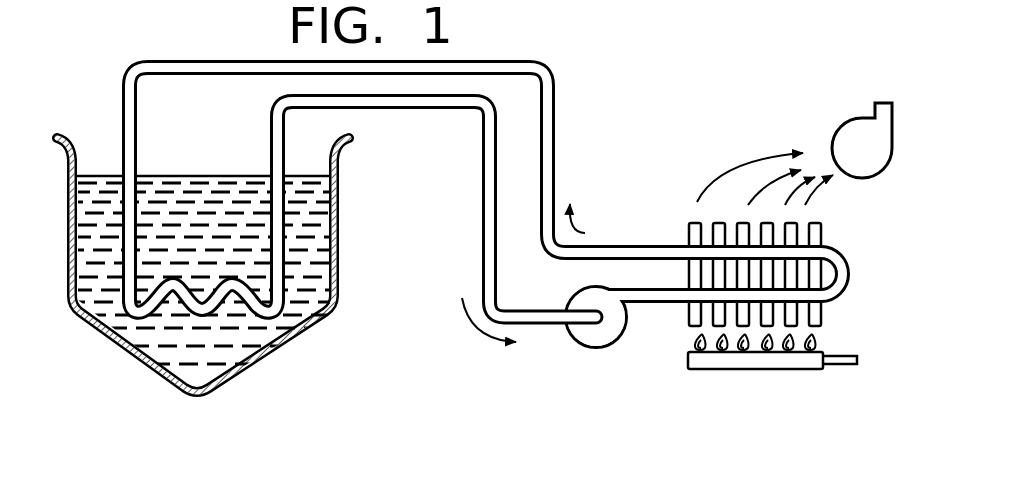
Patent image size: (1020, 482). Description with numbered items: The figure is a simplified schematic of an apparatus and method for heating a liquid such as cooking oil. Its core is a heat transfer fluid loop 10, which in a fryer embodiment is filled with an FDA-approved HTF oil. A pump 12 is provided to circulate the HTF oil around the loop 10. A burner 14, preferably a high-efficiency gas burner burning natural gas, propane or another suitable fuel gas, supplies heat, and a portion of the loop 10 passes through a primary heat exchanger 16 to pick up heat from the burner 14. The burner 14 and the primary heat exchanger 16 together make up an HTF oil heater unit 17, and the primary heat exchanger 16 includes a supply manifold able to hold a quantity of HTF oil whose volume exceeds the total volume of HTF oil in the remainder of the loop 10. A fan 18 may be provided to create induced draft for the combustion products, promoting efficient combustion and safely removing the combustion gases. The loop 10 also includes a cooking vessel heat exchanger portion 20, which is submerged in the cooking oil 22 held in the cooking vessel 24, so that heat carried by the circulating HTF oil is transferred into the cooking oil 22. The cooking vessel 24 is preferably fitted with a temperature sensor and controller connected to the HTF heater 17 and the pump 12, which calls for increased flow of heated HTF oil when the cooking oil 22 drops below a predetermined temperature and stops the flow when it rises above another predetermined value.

The heat transfer fluid loop 10 is at (482, 195).
The pump 12 is at (596, 348).
The burner 14 is at (768, 369).
The primary heat exchanger 16 is at (818, 313).
The HTF oil heater unit 17 is at (865, 214).
The fan 18 is at (843, 132).
The cooking vessel heat exchanger portion 20 is at (210, 307).
The cooking oil 22 is at (187, 355).
The cooking vessel 24 is at (128, 368).